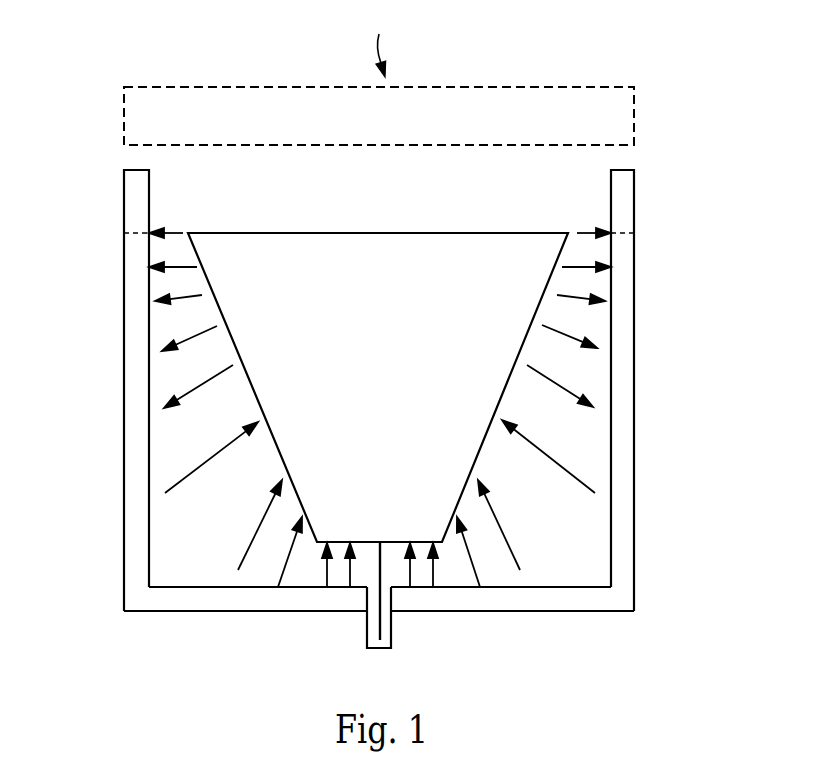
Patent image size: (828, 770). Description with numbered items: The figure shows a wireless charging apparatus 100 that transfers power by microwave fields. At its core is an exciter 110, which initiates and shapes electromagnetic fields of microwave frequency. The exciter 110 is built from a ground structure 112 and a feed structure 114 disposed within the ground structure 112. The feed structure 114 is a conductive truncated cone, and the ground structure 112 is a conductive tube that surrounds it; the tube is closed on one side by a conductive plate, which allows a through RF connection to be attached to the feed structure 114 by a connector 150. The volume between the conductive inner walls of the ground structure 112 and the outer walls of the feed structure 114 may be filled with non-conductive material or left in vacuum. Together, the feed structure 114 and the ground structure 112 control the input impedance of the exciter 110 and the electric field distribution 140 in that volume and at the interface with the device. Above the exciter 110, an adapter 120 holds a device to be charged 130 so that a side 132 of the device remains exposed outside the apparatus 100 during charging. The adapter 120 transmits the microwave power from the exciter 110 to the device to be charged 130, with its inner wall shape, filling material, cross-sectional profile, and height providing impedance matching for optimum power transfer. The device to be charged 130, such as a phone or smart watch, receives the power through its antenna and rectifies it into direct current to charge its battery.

The wireless charging apparatus 100 is at (680, 192).
The exciter 110 is at (110, 234).
The ground structure 112 is at (136, 612).
The feed structure 114 is at (394, 384).
The adapter 120 is at (124, 212).
The device to be charged 130 is at (124, 115).
The side of the device to be charged 132 is at (379, 43).
The electric field distribution 140 is at (578, 232).
The connector 150 is at (392, 643).